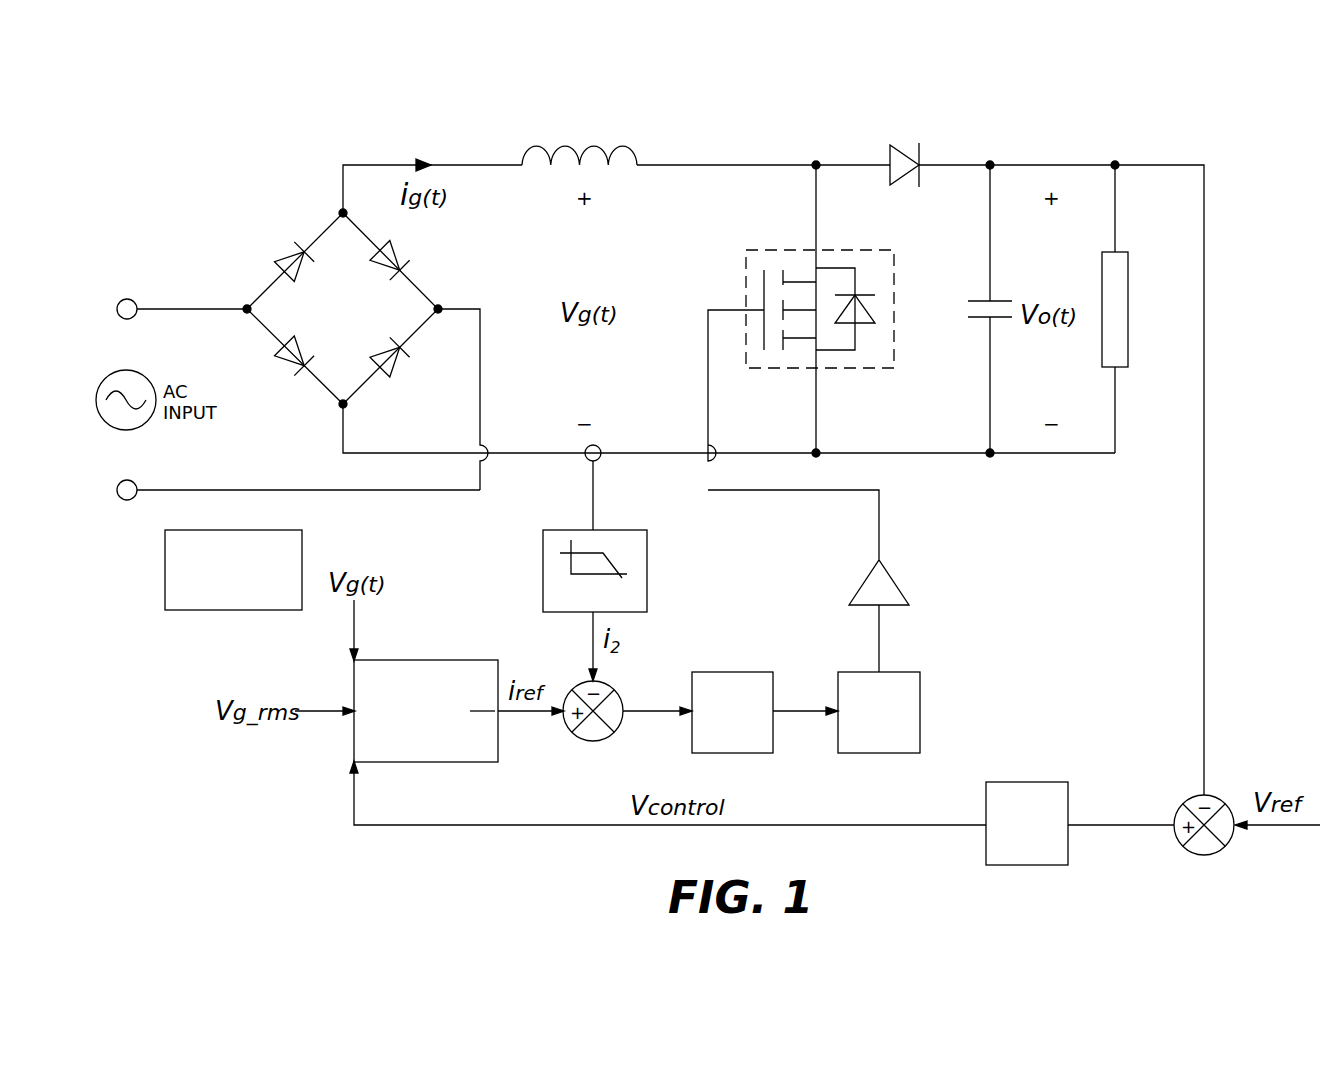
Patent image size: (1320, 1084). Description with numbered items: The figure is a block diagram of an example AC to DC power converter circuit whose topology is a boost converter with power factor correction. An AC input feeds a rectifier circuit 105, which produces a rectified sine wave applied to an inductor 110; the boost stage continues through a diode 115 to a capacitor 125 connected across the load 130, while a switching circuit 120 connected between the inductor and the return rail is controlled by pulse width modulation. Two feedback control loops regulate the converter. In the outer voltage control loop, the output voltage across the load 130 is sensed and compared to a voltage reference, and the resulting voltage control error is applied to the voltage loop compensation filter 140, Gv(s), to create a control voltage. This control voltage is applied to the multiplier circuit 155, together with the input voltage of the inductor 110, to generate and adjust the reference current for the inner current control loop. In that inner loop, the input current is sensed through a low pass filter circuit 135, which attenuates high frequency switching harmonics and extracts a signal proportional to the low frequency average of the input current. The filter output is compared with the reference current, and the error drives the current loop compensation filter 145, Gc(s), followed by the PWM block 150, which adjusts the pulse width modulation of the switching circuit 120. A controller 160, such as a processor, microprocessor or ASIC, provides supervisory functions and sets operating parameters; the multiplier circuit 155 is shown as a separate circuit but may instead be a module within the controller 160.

The rectifier circuit 105 is at (326, 232).
The inductor 110 is at (597, 143).
The diode 115 is at (910, 150).
The switching circuit 120 is at (832, 250).
The capacitor 125 is at (1002, 300).
The load 130 is at (1129, 312).
The low pass filter circuit 135 is at (650, 573).
The voltage loop compensation filter 140 is at (1027, 782).
The current loop compensation filter 145 is at (733, 672).
The PWM block 150 is at (921, 716).
The multiplier circuit 155 is at (422, 763).
The controller 160 is at (240, 530).